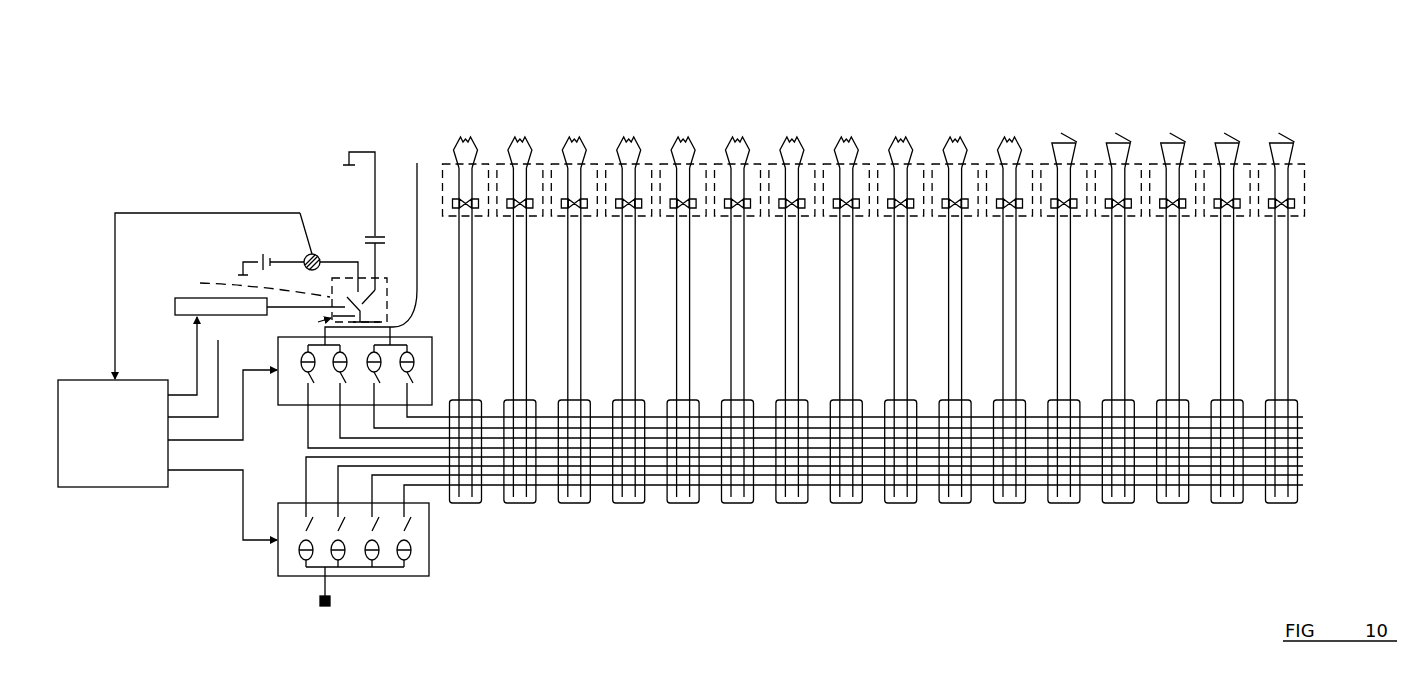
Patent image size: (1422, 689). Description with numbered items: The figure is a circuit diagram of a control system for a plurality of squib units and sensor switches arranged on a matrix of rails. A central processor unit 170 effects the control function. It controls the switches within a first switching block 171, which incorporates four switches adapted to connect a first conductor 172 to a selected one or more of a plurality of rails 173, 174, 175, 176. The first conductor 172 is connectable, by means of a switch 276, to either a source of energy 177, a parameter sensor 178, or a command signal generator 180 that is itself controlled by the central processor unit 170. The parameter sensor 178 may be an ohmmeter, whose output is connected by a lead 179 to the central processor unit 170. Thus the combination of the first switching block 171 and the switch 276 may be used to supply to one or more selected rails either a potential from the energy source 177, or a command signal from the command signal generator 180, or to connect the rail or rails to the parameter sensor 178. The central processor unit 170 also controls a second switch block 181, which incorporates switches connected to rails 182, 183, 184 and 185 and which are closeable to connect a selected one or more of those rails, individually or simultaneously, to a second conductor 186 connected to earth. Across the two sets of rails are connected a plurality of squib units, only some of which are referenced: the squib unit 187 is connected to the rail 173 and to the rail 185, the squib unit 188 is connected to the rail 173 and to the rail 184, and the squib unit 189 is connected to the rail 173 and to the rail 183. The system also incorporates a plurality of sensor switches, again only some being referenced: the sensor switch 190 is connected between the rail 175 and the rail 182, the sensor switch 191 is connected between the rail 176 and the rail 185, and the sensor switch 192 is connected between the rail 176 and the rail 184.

The central processor unit 170 is at (70, 380).
The first switching block 171 is at (431, 337).
The first conductor 172 is at (417, 163).
The rail 173 is at (1305, 417).
The rail 174 is at (1305, 428).
The rail 175 is at (1305, 438).
The rail 176 is at (1305, 448).
The source of energy 177 is at (384, 236).
The parameter sensor 178 is at (312, 253).
The lead 179 is at (200, 213).
The command signal generator 180 is at (175, 307).
The second switch block 181 is at (430, 538).
The rail 182 is at (1307, 488).
The rail 183 is at (1305, 475).
The rail 184 is at (1305, 466).
The rail 185 is at (1305, 457).
The second conductor 186 is at (320, 587).
The squib unit 187 is at (524, 141).
The squib unit 188 is at (578, 142).
The squib unit 189 is at (633, 142).
The sensor switch 190 is at (1062, 138).
The sensor switch 191 is at (1120, 138).
The sensor switch 192 is at (1173, 138).
The switch 276 is at (200, 283).